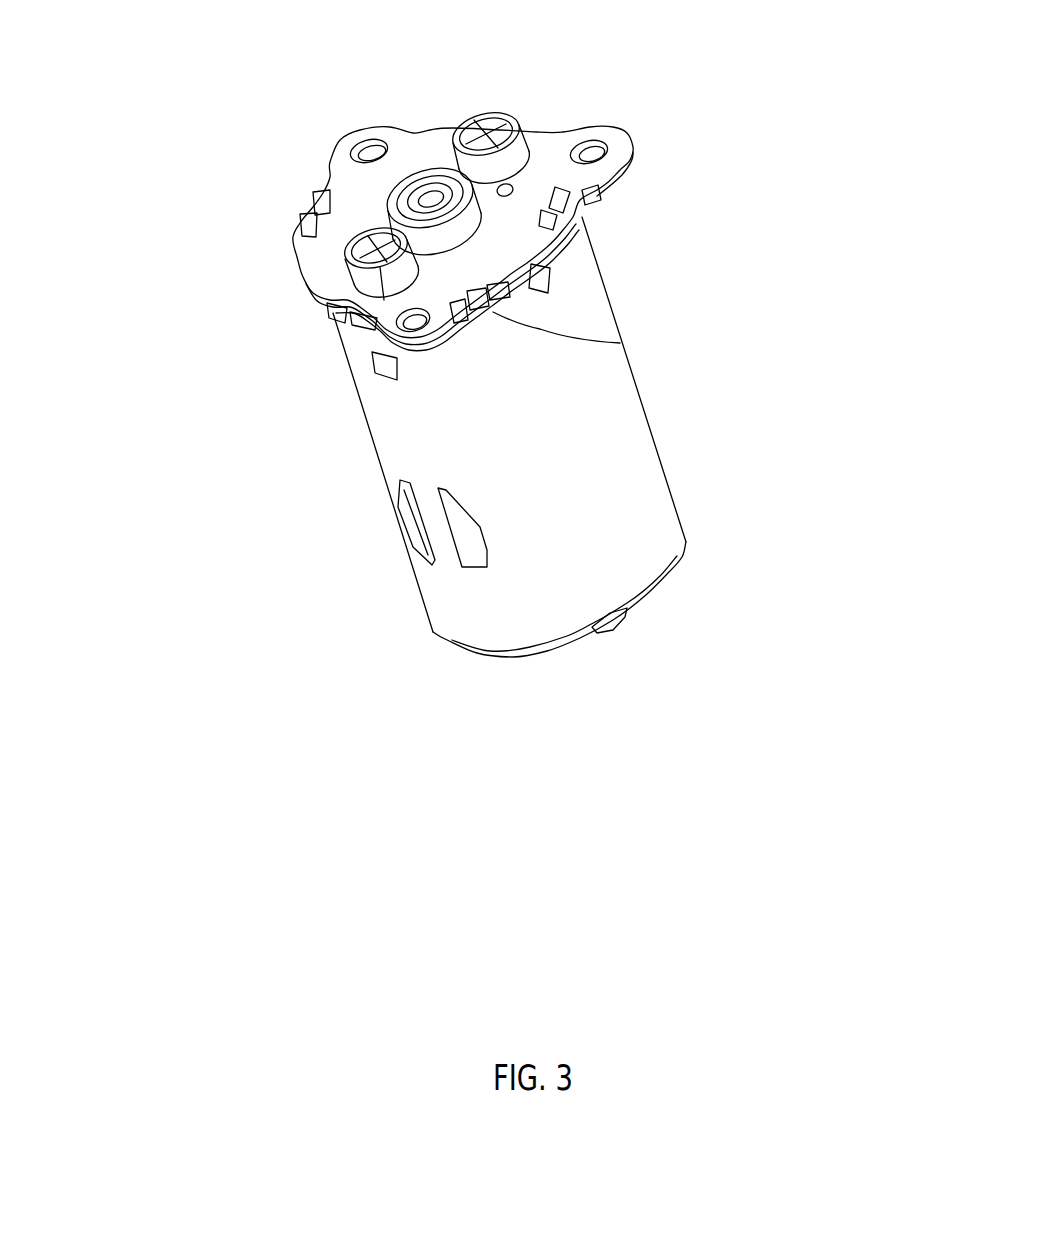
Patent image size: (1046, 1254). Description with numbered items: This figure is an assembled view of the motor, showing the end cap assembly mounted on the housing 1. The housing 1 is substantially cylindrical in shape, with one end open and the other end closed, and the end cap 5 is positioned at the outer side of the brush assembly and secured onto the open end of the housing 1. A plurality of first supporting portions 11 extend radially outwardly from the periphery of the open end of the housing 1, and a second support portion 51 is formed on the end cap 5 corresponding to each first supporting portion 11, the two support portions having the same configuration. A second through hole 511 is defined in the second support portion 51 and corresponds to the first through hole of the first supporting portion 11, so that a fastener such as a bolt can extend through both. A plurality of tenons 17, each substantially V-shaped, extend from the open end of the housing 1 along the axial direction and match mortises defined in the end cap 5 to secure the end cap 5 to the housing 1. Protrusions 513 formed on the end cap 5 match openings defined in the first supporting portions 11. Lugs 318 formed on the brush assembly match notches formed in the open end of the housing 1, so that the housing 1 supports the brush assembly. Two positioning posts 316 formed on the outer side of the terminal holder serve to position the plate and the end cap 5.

The housing 1 is at (558, 466).
The end cap 5 is at (343, 225).
The first supporting portion 11 is at (620, 177).
The tenon 17 is at (300, 220).
The second support portion 51 is at (342, 157).
The second through hole 511 is at (617, 137).
The protrusion 513 is at (620, 343).
The positioning post 316 is at (545, 133).
The lug 318 is at (540, 284).